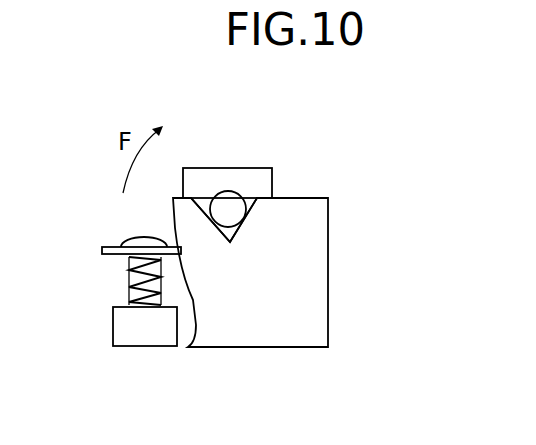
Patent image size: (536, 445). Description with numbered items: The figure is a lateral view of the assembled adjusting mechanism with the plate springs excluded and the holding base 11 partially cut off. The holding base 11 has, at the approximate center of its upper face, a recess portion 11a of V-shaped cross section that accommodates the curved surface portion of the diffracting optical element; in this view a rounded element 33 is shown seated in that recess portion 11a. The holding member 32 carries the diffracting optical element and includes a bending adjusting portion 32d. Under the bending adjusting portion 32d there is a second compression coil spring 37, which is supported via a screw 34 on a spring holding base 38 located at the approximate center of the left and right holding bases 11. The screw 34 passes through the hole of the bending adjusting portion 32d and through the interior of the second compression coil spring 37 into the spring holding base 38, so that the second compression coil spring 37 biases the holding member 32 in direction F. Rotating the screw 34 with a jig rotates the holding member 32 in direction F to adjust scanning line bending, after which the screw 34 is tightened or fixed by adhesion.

The holding base 11 is at (305, 280).
The recess portion 11a is at (205, 198).
The holding member 32 is at (252, 160).
The ball 33 is at (237, 203).
The screw 34 is at (136, 237).
The bending adjusting portion 32d is at (105, 255).
The second compression coil spring 37 is at (125, 290).
The spring holding base 38 is at (143, 332).